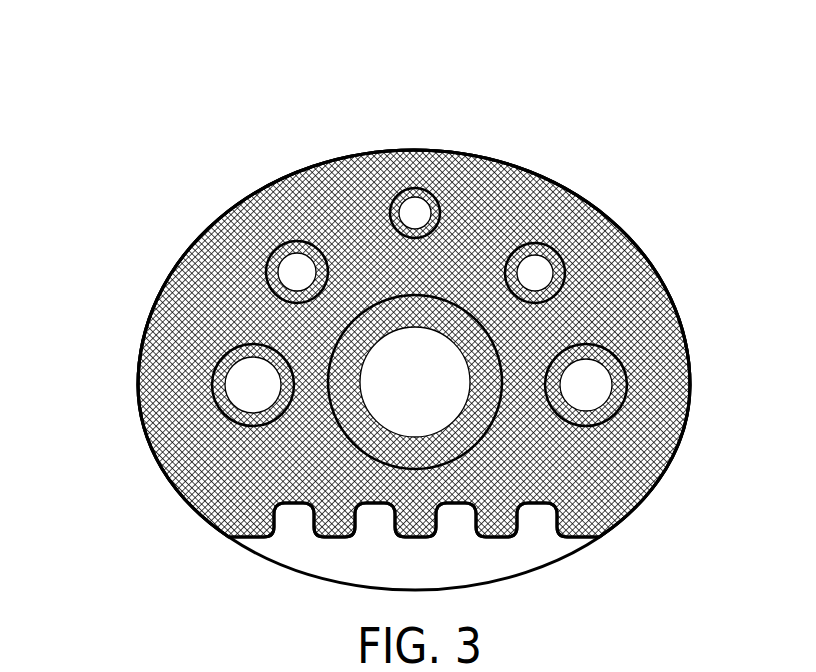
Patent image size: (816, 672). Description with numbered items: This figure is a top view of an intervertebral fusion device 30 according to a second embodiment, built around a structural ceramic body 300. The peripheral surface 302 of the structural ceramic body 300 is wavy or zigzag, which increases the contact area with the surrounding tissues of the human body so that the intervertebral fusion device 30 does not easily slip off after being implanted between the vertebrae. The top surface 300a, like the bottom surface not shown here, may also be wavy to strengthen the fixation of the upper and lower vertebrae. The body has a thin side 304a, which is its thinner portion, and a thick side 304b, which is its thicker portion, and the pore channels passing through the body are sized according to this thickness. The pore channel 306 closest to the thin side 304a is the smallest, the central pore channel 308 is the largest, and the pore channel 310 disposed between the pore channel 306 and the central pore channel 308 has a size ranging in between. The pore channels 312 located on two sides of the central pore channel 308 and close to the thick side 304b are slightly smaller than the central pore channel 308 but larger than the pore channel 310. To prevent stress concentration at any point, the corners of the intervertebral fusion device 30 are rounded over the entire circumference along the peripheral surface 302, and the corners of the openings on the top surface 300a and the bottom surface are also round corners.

The intervertebral fusion device 30 is at (390, 313).
The structural ceramic body 300 is at (143, 405).
The top surface 300a is at (152, 335).
The peripheral surface 302 is at (330, 540).
The thin side 304a is at (423, 136).
The thick side 304b is at (414, 497).
The pore channel 306 is at (408, 198).
The central pore channel 308 is at (450, 412).
The pore channel 310 is at (290, 268).
The pore channels 312 is at (246, 391).